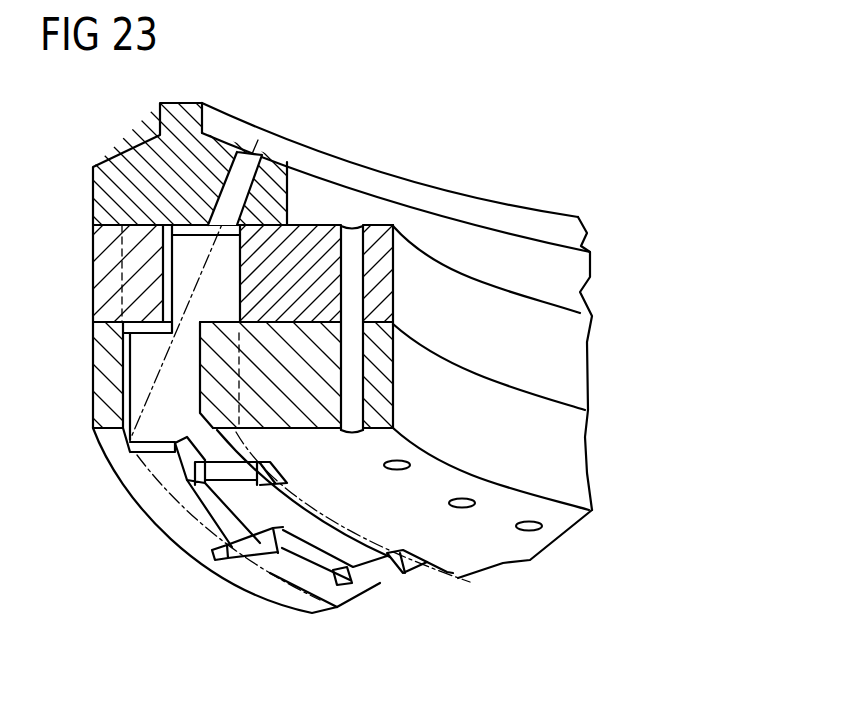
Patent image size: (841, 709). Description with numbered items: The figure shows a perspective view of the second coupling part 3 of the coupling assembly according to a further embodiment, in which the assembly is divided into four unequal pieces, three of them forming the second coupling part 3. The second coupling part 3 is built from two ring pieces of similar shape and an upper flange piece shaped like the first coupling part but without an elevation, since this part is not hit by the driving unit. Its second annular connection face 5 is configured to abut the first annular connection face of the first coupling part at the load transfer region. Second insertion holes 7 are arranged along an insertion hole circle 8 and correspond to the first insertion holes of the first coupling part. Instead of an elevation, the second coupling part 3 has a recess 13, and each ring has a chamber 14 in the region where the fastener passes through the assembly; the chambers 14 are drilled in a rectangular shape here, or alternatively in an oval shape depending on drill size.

The second coupling part 3 is at (418, 133).
The second annular connection face 5 is at (130, 478).
The second insertion holes 7 is at (256, 156).
The insertion hole circle 8 is at (265, 578).
The recess 13 is at (320, 548).
The chamber 14 is at (182, 258).